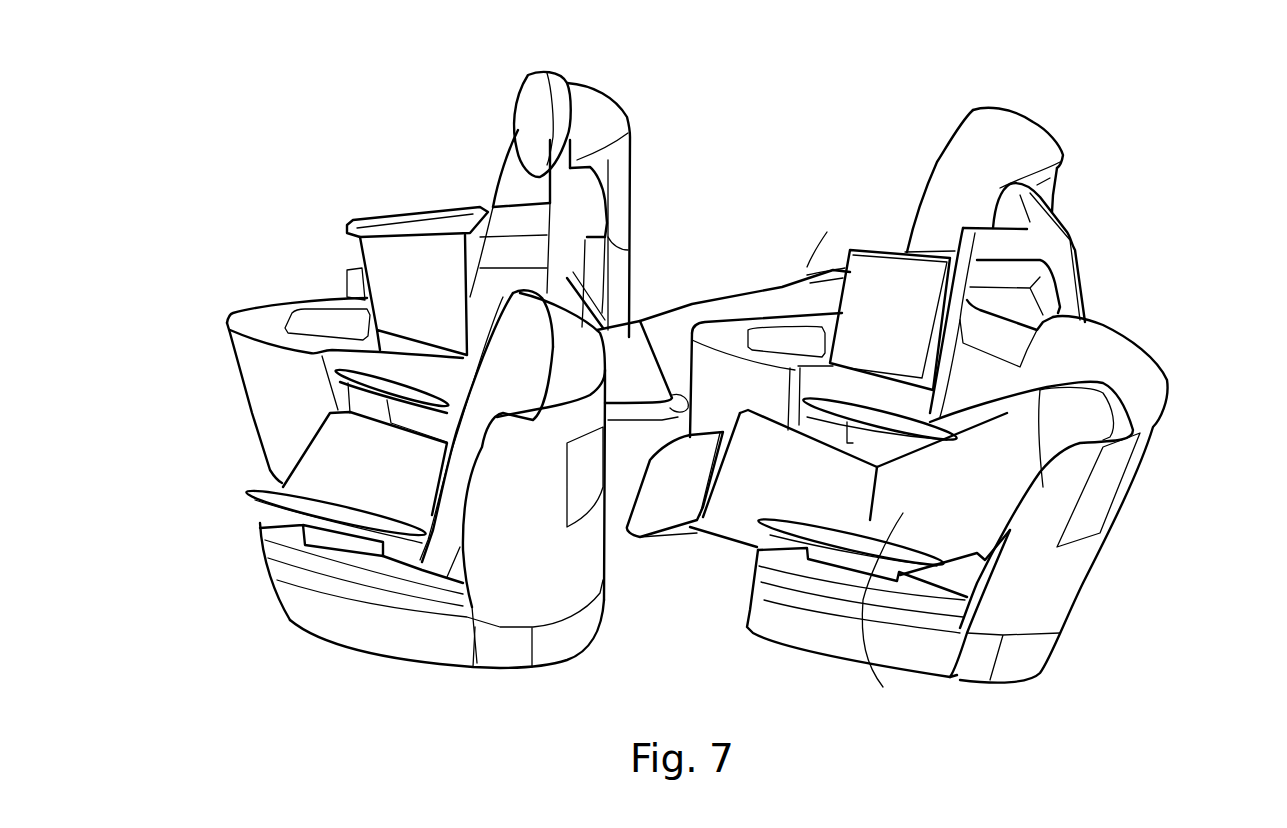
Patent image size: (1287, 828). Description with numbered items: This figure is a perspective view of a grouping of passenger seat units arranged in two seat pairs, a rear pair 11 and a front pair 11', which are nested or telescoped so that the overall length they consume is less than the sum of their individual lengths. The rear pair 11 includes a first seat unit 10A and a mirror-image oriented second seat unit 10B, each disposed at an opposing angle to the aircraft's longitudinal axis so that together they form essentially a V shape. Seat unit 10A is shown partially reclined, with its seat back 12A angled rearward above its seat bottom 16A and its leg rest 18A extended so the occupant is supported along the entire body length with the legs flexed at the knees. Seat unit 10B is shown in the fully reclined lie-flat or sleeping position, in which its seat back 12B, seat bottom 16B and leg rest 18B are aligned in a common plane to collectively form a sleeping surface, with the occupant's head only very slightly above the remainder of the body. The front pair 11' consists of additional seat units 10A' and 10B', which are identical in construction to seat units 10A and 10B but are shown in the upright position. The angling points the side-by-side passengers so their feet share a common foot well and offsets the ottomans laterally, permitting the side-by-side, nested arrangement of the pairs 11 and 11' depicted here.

The seat unit 10B' is at (488, 199).
The front seat pair 11' is at (337, 341).
The seat unit 10A' is at (398, 503).
The leg rest 18B is at (628, 336).
The seat bottom 16B is at (697, 310).
The seat back 12B is at (805, 297).
The seat unit 10B is at (982, 171).
The rear seat pair 11 is at (1059, 300).
The seat unit 10A is at (972, 486).
The leg rest 18A is at (650, 517).
The seat bottom 16A is at (722, 513).
The seat back 12A is at (868, 678).